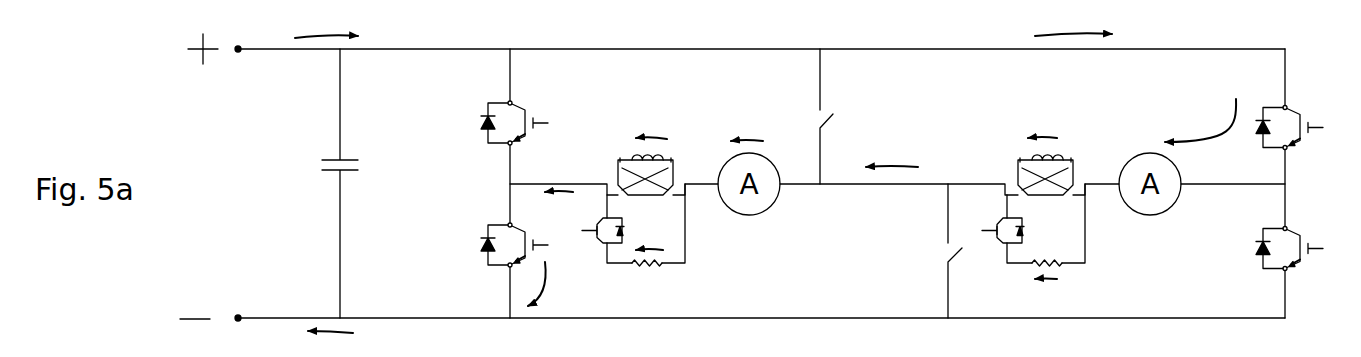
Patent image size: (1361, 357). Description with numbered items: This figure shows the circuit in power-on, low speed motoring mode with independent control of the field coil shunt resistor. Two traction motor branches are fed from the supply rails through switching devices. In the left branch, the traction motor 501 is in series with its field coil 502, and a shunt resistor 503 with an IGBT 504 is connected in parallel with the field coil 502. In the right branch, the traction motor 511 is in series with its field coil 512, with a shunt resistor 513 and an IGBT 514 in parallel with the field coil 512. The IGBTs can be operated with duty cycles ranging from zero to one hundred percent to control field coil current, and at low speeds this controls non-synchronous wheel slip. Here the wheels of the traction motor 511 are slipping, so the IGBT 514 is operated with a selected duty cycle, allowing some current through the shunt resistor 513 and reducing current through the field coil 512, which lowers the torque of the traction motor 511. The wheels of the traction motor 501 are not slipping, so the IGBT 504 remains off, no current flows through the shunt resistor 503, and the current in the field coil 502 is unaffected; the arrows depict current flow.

The traction motor 501 is at (752, 220).
The field coil 502 is at (672, 150).
The shunt resistor 503 is at (650, 270).
The IGBT 504 is at (600, 245).
The traction motor 511 is at (1155, 218).
The field coil 512 is at (1063, 147).
The shunt resistor 513 is at (1063, 268).
The IGBT 514 is at (995, 247).